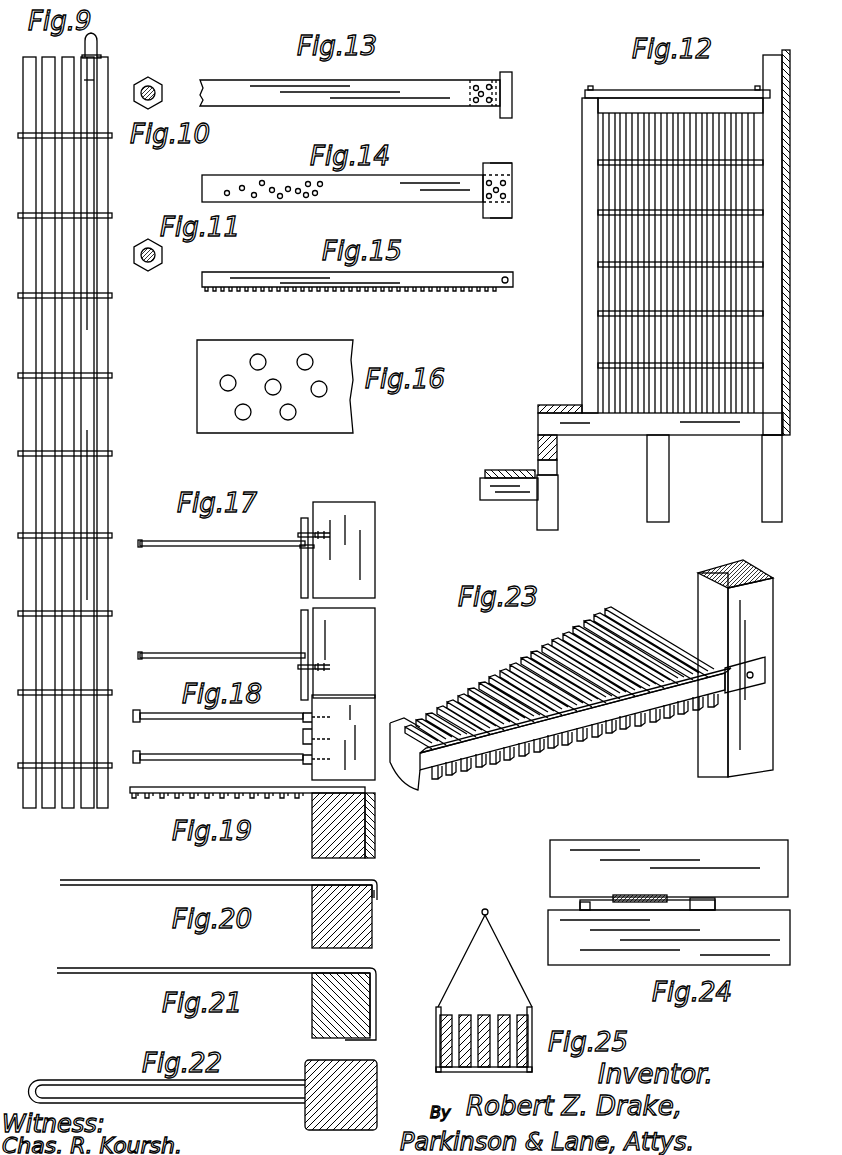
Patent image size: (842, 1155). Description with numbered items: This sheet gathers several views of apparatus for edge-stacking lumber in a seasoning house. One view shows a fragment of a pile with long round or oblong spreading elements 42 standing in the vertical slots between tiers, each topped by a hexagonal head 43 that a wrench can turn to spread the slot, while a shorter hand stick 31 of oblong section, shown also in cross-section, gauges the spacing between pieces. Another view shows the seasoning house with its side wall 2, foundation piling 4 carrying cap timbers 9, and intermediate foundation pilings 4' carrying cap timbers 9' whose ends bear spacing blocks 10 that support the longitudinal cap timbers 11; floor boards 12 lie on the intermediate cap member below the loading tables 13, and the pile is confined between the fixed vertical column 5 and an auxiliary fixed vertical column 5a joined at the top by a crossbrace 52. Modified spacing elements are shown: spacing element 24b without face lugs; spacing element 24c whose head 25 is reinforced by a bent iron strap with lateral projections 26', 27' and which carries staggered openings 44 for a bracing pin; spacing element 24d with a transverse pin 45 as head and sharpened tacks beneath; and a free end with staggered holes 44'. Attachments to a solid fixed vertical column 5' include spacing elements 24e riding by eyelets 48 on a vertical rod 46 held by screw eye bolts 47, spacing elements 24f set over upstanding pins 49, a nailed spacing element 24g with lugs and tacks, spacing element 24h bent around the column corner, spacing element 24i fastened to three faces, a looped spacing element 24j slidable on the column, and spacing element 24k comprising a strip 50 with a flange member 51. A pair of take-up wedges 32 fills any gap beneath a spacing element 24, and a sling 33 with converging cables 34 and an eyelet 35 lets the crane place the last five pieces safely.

In FIG. 12, the side walls 2 is at (786, 66).
In FIG. 12, the foundation piling 4 is at (714, 478).
In FIG. 12, the intermediate foundation pilings 4' is at (567, 502).
In FIG. 12, the fixed vertical columns 5 is at (755, 245).
In FIG. 17, the fixed vertical column 5' is at (360, 600).
In FIG. 18, the fixed vertical column 5' is at (359, 729).
In FIG. 19, the fixed vertical column 5' is at (359, 825).
In FIG. 20, the fixed vertical column 5' is at (357, 916).
In FIG. 21, the fixed vertical column 5' is at (359, 1001).
In FIG. 22, the fixed vertical column 5' is at (353, 1089).
In FIG. 23, the fixed vertical column 5' is at (581, 675).
In FIG. 12, the auxiliary fixed vertical column 5a is at (582, 303).
In FIG. 12, the cap timbers 9 is at (660, 443).
In FIG. 12, the cap timbers 9' is at (509, 505).
In FIG. 12, the spacing blocks 10 is at (557, 470).
In FIG. 12, the longitudinal cap timbers 11 is at (558, 449).
In FIG. 12, the floor boards 12 is at (500, 468).
In FIG. 12, the loading tables 13 is at (542, 405).
In FIG. 9, the spacing element 24 is at (93, 612).
In FIG. 19, the spacing element 24 is at (247, 792).
In FIG. 24, the spacing element 24 is at (636, 895).
In FIG. 13, the spacing element 24b is at (440, 78).
In FIG. 14, the spacing element 24c is at (442, 188).
In FIG. 15, the spacing element 24d is at (455, 283).
In FIG. 17, the spacing elements 24e is at (205, 552).
In FIG. 18, the spacing elements 24f is at (188, 721).
In FIG. 18, the spacing element 24g is at (240, 760).
In FIG. 20, the spacing element 24h is at (122, 885).
In FIG. 21, the spacing element 24i is at (211, 1004).
In FIG. 22, the spacing element 24j is at (58, 1080).
In FIG. 23, the spacing element 24k is at (440, 775).
In FIG. 14, the head 25 is at (512, 187).
In FIG. 14, the lateral projection 26' is at (509, 150).
In FIG. 14, the lateral projection 27' is at (518, 226).
In FIG. 9, the hand stick 31 is at (92, 85).
In FIG. 10, the hand stick 31 is at (152, 92).
In FIG. 9, the take-up wedges 32 is at (100, 57).
In FIG. 24, the take-up wedges 32 is at (585, 900).
In FIG. 9, the sling 33 is at (96, 40).
In FIG. 25, the sling 33 is at (445, 1072).
In FIG. 25, the converging cables 34 is at (458, 960).
In FIG. 25, the eyelet 35 is at (485, 909).
In FIG. 9, the spreading elements 42 is at (78, 176).
In FIG. 9, the hexagonal head 43 is at (88, 133).
In FIG. 11, the hexagonal head 43 is at (163, 255).
In FIG. 14, the staggered openings 44 is at (274, 173).
In FIG. 16, the staggered holes 44' is at (275, 370).
In FIG. 15, the transverse pin 45 is at (509, 280).
In FIG. 17, the vertical rod 46 is at (300, 587).
In FIG. 17, the screw eye bolts 47 is at (298, 535).
In FIG. 17, the eyelets 48 is at (300, 550).
In FIG. 18, the upstanding pins 49 is at (300, 755).
In FIG. 23, the strip 50 is at (680, 700).
In FIG. 23, the flange member 51 is at (642, 700).
In FIG. 12, the crossbrace 52 is at (628, 94).